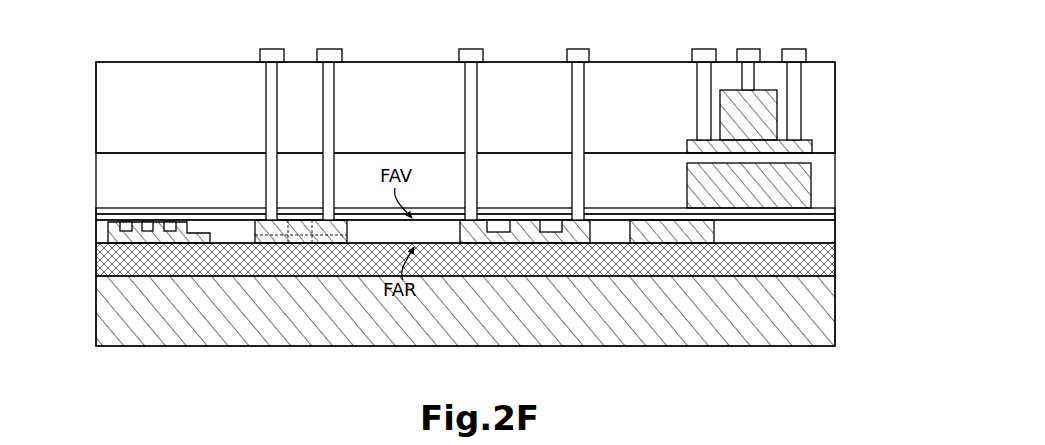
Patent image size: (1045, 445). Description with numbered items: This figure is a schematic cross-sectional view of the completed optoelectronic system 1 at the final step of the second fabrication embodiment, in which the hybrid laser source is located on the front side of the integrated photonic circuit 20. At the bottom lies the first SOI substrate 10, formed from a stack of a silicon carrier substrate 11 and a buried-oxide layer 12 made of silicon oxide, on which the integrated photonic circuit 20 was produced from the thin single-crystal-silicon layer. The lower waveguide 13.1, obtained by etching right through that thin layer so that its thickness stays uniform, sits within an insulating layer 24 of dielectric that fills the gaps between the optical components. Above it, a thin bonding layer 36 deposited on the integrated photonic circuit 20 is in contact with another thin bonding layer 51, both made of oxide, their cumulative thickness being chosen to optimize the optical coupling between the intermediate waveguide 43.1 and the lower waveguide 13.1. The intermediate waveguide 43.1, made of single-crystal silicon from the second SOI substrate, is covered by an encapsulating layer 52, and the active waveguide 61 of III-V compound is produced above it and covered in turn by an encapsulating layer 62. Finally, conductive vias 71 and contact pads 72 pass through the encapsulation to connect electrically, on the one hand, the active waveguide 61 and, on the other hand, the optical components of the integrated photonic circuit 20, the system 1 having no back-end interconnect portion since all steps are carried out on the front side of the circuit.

The optoelectronic system 1 is at (489, 181).
The first SOI substrate 10 is at (481, 294).
The silicon carrier substrate 11 is at (838, 308).
The buried-oxide layer 12 is at (838, 258).
The lower waveguide 13.1 is at (672, 248).
The integrated photonic circuit 20 is at (481, 255).
The insulating layer 24 is at (514, 269).
The thin bonding layer 36 is at (838, 216).
The intermediate waveguide 43.1 is at (840, 183).
The thin bonding layer 51 is at (838, 209).
The encapsulating layer 52 is at (817, 186).
The active waveguide 61 is at (783, 115).
The encapsulating layer 62 is at (840, 83).
The conductive vias 71 is at (460, 116).
The contact pads 72 is at (689, 51).